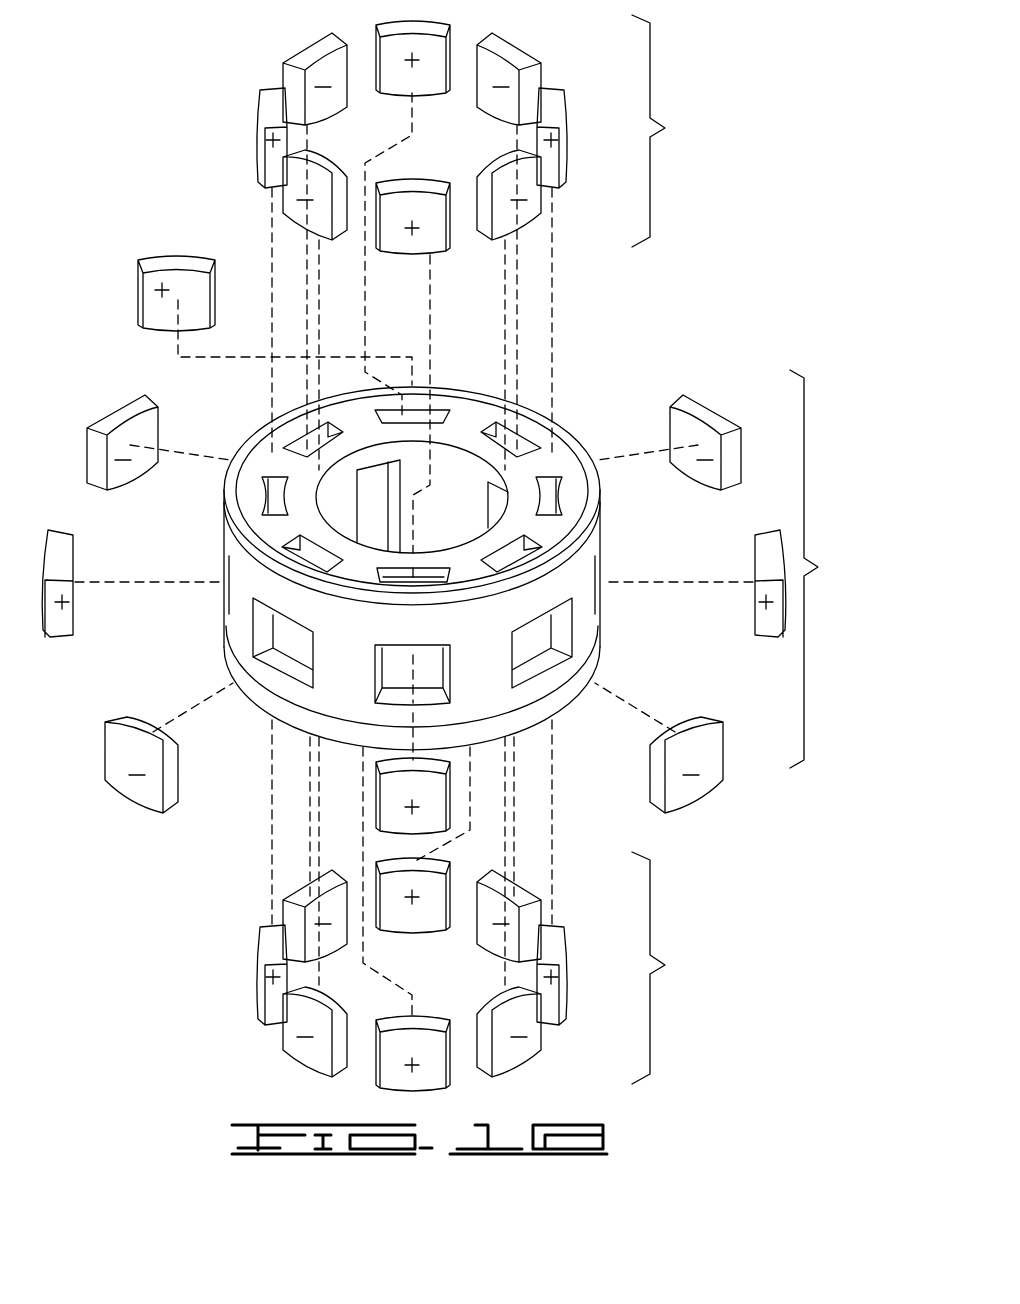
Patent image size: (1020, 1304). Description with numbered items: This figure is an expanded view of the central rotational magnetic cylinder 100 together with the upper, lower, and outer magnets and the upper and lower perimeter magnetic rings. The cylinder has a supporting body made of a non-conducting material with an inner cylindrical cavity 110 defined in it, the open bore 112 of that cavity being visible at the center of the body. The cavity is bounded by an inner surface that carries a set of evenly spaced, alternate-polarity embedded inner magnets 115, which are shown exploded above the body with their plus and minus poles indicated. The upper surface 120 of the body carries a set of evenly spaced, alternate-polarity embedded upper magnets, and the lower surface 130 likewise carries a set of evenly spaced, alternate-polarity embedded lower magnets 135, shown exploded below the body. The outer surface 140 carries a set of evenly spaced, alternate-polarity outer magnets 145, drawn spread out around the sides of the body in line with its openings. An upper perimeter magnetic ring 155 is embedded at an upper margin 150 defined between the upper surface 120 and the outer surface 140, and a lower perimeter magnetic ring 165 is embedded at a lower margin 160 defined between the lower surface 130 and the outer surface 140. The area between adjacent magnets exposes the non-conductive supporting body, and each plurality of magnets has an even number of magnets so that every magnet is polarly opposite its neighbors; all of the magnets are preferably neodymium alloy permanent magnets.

The central rotational magnetic cylinder 100 is at (156, 128).
The inner cylindrical cavity 110 is at (337, 513).
The central bore 112 is at (463, 477).
The inner magnets 115 is at (665, 128).
The upper surface 120 is at (468, 420).
The lower surface 130 is at (584, 722).
The lower magnets 135 is at (665, 965).
The outer surface 140 is at (240, 628).
The outer magnets 145 is at (818, 567).
The upper margin 150 is at (248, 447).
The upper perimeter magnetic ring 155 is at (575, 442).
The lower margin 160 is at (252, 703).
The lower perimeter magnetic ring 165 is at (585, 665).